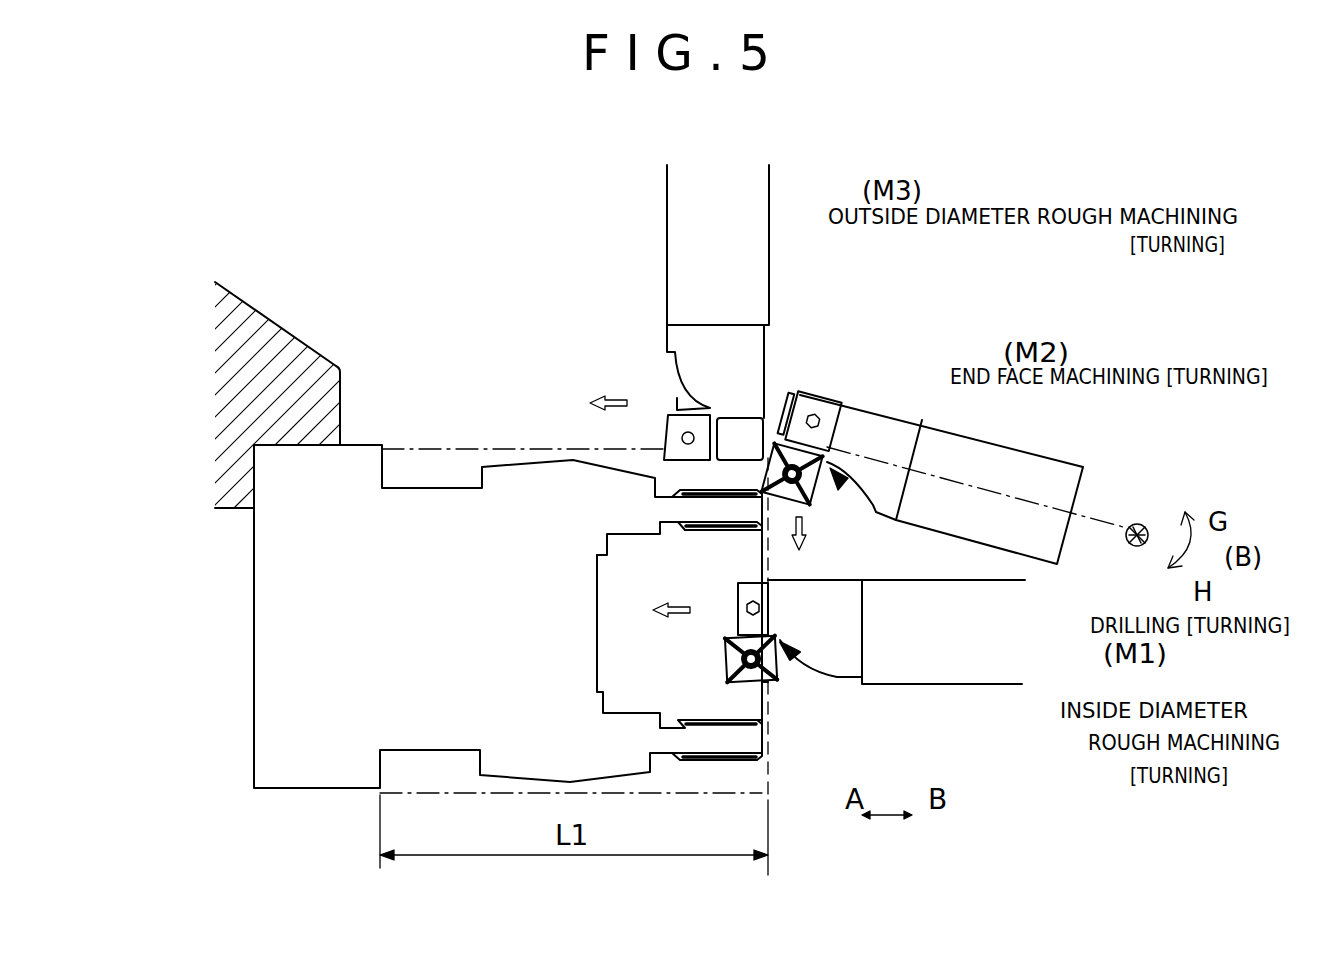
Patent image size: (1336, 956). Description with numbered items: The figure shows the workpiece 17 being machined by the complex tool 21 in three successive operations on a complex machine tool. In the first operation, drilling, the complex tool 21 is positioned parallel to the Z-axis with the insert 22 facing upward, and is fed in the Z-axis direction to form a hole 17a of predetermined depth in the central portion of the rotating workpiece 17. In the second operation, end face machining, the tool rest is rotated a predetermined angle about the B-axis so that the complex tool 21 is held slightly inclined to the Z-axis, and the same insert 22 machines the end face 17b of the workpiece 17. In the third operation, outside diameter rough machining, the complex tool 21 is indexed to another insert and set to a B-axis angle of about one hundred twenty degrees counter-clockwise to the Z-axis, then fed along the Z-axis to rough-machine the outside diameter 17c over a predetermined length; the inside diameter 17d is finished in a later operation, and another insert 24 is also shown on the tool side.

The workpiece 17 is at (310, 773).
The hole 17a is at (623, 741).
The end face 17b is at (773, 573).
The outside diameter 17c is at (531, 452).
The inside diameter 17d is at (766, 686).
The complex tool 21 is at (769, 262).
The insert 22 is at (795, 496).
The cutting insert 24 is at (662, 428).